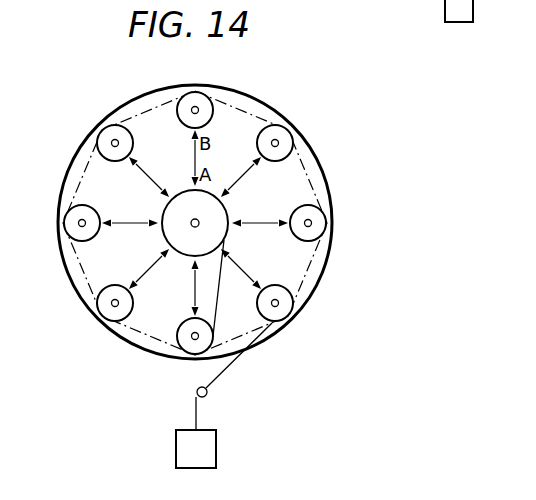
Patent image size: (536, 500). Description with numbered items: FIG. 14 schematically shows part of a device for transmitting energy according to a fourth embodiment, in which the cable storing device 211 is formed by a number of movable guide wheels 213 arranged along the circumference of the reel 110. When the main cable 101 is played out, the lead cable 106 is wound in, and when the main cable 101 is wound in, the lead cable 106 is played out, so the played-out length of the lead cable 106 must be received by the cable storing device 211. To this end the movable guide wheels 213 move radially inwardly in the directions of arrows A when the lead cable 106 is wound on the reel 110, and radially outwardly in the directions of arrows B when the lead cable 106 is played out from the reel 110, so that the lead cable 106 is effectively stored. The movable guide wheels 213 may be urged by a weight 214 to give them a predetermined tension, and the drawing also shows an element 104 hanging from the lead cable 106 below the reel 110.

The main cable 101 is at (137, 104).
The movable guide wheels 213 is at (283, 127).
The reel 110 is at (226, 206).
The cable storing device 211 is at (382, 229).
The lead cable 106 is at (224, 318).
The weight 104 is at (208, 445).
The weight 214 is at (474, 6).